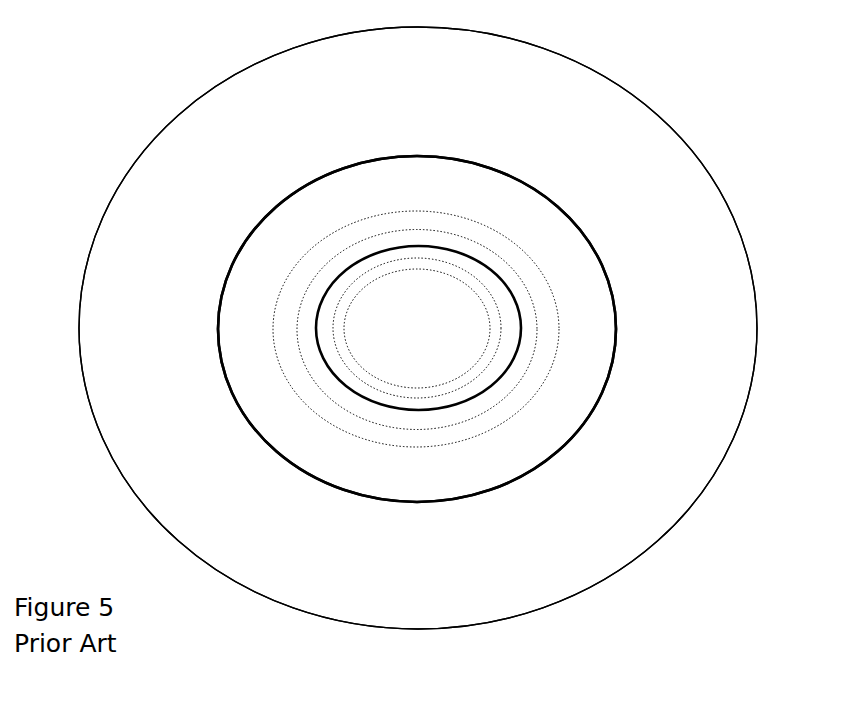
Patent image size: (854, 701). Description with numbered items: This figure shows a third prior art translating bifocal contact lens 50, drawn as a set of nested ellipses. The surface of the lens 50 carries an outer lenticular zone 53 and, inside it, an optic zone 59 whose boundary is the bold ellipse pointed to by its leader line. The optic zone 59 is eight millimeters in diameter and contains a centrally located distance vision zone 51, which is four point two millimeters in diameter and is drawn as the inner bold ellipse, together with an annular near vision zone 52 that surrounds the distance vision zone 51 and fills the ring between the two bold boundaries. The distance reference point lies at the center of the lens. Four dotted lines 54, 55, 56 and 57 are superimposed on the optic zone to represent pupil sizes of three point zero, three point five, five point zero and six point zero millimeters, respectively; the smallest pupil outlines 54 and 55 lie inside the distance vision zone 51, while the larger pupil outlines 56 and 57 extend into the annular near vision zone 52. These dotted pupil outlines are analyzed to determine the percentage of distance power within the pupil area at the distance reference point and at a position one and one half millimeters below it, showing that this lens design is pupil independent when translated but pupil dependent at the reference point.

The lens 50 is at (724, 501).
The distance vision zone 51 is at (424, 344).
The annular near vision zone 52 is at (447, 477).
The lenticular zone 53 is at (396, 566).
The dotted line for 3.0 mm pupil size 54 is at (467, 283).
The dotted line for 3.5 mm pupil size 55 is at (487, 282).
The dotted line for 5.0 mm pupil size 56 is at (522, 275).
The dotted line for 6.0 mm pupil size 57 is at (552, 288).
The optic zone 59 is at (618, 302).